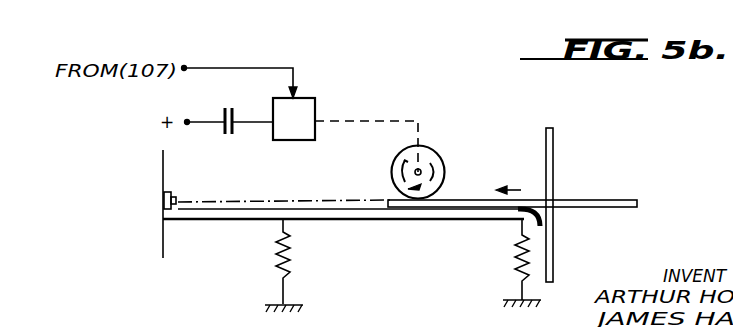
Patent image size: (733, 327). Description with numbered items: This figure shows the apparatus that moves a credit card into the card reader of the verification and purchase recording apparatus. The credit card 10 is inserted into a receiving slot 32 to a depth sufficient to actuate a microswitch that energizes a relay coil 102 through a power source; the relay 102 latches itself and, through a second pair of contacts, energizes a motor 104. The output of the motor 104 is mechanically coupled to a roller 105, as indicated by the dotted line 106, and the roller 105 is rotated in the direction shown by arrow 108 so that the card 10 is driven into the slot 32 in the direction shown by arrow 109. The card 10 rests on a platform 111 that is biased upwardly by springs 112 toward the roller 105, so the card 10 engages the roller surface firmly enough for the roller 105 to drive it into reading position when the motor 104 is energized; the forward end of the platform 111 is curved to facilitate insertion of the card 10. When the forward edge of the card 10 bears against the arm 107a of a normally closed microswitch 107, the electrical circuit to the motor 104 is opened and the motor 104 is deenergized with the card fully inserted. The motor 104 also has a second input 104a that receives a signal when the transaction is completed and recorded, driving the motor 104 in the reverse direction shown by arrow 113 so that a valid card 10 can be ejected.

The credit card 10 is at (598, 200).
The receiving slot 32 is at (557, 200).
The relay coil 102 is at (224, 140).
The motor 104 is at (313, 98).
The second input 104a is at (295, 78).
The roller 105 is at (437, 153).
The dotted line 106 is at (364, 119).
The normally closed microswitch 107 is at (171, 192).
The arm 107a is at (178, 199).
The arrow 108 is at (440, 178).
The arrow 109 is at (522, 177).
The platform 111 is at (347, 221).
The springs 112 is at (278, 262).
The arrow 113 is at (401, 165).